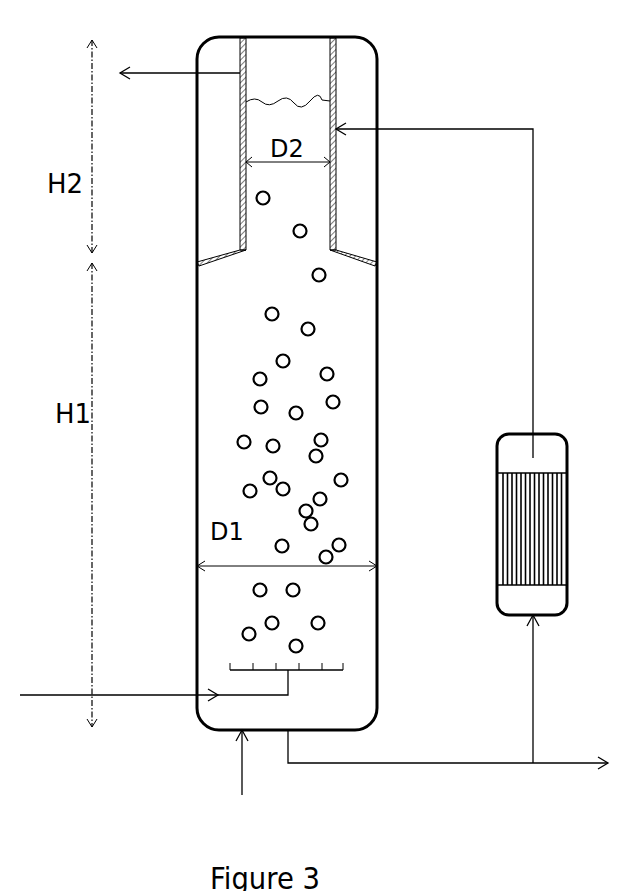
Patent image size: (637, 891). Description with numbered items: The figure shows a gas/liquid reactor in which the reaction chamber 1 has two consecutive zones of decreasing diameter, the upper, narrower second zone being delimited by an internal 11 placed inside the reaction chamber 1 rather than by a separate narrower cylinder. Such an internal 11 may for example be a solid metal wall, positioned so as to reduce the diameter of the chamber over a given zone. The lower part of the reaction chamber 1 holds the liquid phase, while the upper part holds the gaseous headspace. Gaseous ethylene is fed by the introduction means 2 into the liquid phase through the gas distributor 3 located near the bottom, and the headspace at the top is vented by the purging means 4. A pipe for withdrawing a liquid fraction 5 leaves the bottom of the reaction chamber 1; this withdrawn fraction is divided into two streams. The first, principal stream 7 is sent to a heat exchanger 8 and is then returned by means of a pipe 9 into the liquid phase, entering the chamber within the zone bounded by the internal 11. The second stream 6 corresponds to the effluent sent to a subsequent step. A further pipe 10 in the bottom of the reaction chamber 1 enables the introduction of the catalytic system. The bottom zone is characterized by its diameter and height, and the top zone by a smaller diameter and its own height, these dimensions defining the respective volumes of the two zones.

The reaction chamber 1 is at (197, 450).
The means for introducing gaseous ethylene 2 is at (73, 693).
The gas distributor 3 is at (232, 663).
The purging means 4 is at (175, 72).
The pipe for withdrawing a liquid fraction 5 is at (410, 765).
The second stream 6 is at (560, 765).
The first principal stream 7 is at (533, 673).
The heat exchanger 8 is at (517, 430).
The pipe 9 is at (445, 130).
The pipe for introducing the catalytic system 10 is at (240, 762).
The internal 11 is at (336, 80).